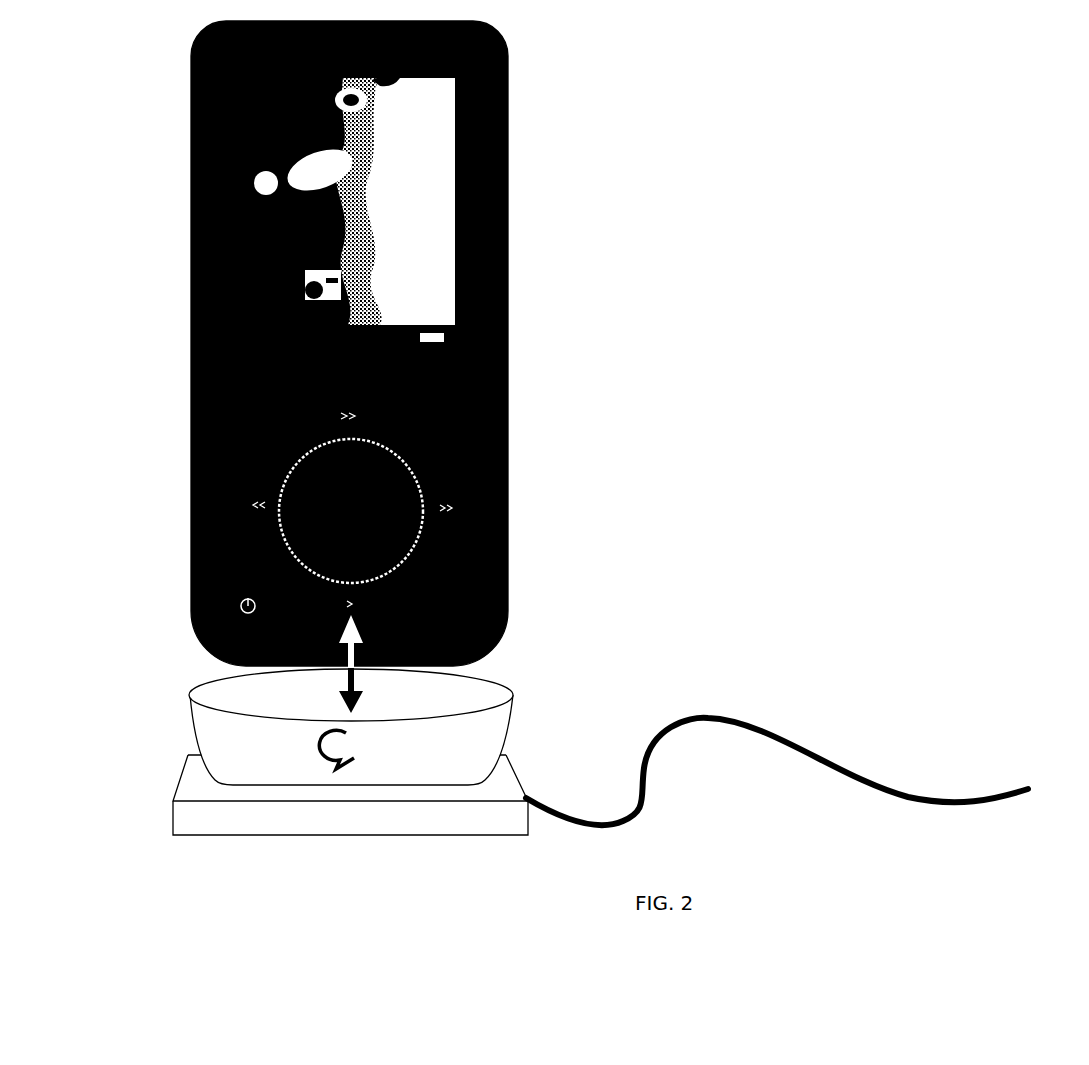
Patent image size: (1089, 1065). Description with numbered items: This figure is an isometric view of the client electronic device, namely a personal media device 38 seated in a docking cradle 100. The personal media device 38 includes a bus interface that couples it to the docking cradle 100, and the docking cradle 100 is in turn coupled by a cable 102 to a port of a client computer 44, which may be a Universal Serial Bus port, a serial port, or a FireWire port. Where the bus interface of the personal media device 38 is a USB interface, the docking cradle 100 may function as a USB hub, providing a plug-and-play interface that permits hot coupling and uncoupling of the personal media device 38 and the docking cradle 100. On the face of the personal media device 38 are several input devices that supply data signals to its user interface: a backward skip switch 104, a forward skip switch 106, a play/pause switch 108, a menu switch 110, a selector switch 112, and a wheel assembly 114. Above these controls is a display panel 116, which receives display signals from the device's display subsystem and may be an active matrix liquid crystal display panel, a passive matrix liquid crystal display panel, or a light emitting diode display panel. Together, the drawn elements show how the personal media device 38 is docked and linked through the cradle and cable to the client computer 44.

The personal media device 38 is at (152, 57).
The docking cradle 100 is at (182, 697).
The cable 102 is at (633, 755).
The backward skip switch 104 is at (248, 466).
The forward skip switch 106 is at (427, 467).
The play/pause switch 108 is at (298, 418).
The menu switch 110 is at (230, 597).
The selector switch 112 is at (351, 511).
The wheel assembly 114 is at (265, 515).
The display panel 116 is at (354, 211).
The client computer 44 is at (913, 720).